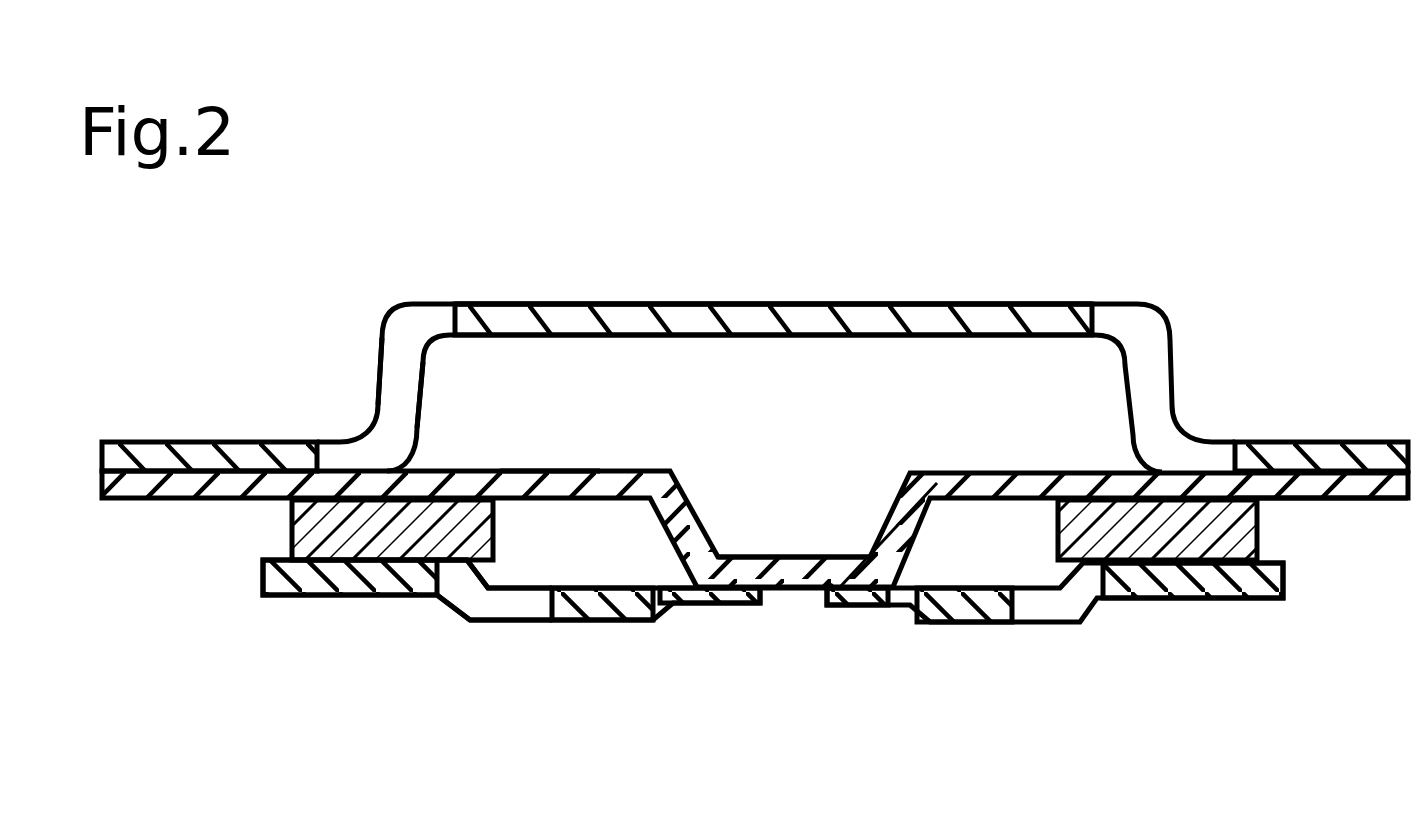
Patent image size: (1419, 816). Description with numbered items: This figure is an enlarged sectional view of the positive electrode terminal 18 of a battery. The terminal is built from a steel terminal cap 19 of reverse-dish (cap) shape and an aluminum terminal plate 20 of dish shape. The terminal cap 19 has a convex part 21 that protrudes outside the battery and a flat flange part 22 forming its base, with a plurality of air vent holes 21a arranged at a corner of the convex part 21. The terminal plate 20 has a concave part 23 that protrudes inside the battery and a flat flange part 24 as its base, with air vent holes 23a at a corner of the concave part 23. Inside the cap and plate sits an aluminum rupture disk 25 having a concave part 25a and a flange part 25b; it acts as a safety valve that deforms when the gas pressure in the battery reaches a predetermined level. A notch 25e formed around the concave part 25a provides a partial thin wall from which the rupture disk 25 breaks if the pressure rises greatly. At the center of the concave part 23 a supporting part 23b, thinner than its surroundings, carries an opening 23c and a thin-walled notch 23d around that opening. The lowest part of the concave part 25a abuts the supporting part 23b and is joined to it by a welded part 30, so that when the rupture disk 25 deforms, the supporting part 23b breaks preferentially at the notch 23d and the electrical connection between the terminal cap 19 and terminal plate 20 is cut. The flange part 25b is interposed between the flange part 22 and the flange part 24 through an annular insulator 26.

The positive electrode terminal 18 is at (144, 253).
The terminal cap 19 is at (756, 289).
The terminal plate 20 is at (592, 636).
The convex part 21 is at (945, 322).
The air vent holes 21a is at (390, 427).
The flange part 22 is at (1372, 460).
The concave part 23 is at (987, 610).
The air vent holes 23a is at (470, 587).
The supporting part 23b is at (863, 597).
The opening 23c is at (797, 616).
The notch 23d is at (697, 620).
The flange part 24 is at (308, 582).
The rupture disk 25 is at (656, 471).
The concave part 25a is at (763, 552).
The flange part 25b is at (1368, 487).
The notch 25e is at (556, 459).
The annular insulator 26 is at (1192, 540).
The welded part 30 is at (831, 586).